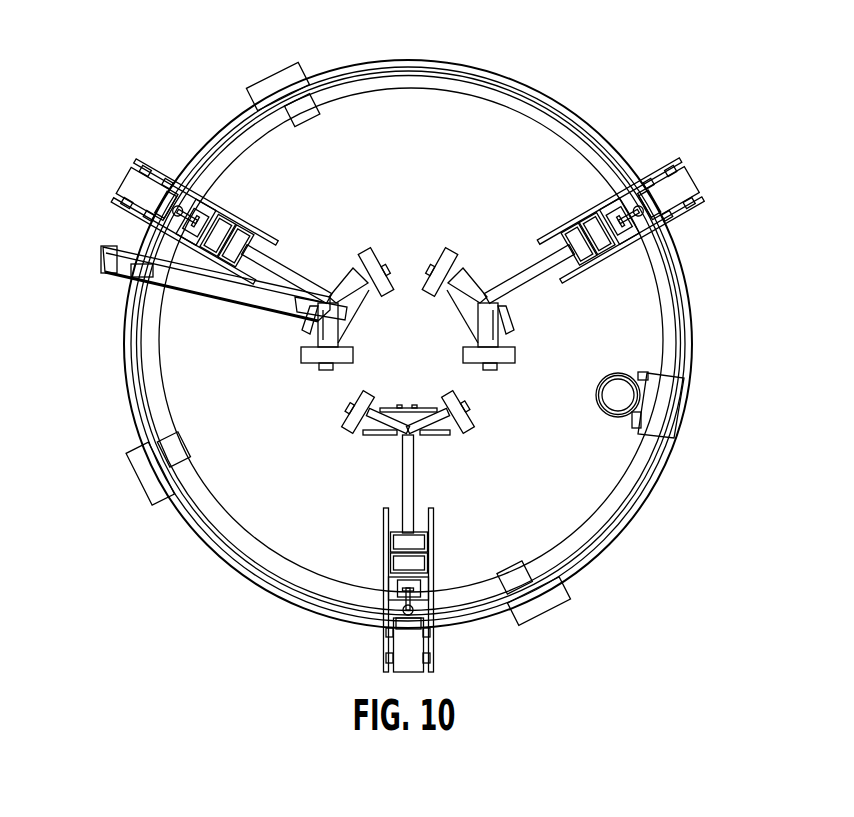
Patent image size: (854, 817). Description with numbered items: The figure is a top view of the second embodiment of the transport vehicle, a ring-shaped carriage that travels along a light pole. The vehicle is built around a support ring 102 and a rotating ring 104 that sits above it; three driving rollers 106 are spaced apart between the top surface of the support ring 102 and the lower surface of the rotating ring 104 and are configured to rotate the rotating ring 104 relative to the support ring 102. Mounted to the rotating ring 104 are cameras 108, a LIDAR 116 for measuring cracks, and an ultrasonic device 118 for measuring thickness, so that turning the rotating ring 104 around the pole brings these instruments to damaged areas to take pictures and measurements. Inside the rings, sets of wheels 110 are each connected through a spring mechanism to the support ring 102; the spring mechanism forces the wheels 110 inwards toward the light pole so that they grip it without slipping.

The support ring 102 is at (497, 75).
The rotating ring 104 is at (508, 108).
The driving rollers 106 is at (165, 155).
The cameras 108 is at (272, 88).
The wheels 110 is at (331, 237).
The LIDAR 116 is at (686, 405).
The ultrasonic device 118 is at (108, 262).